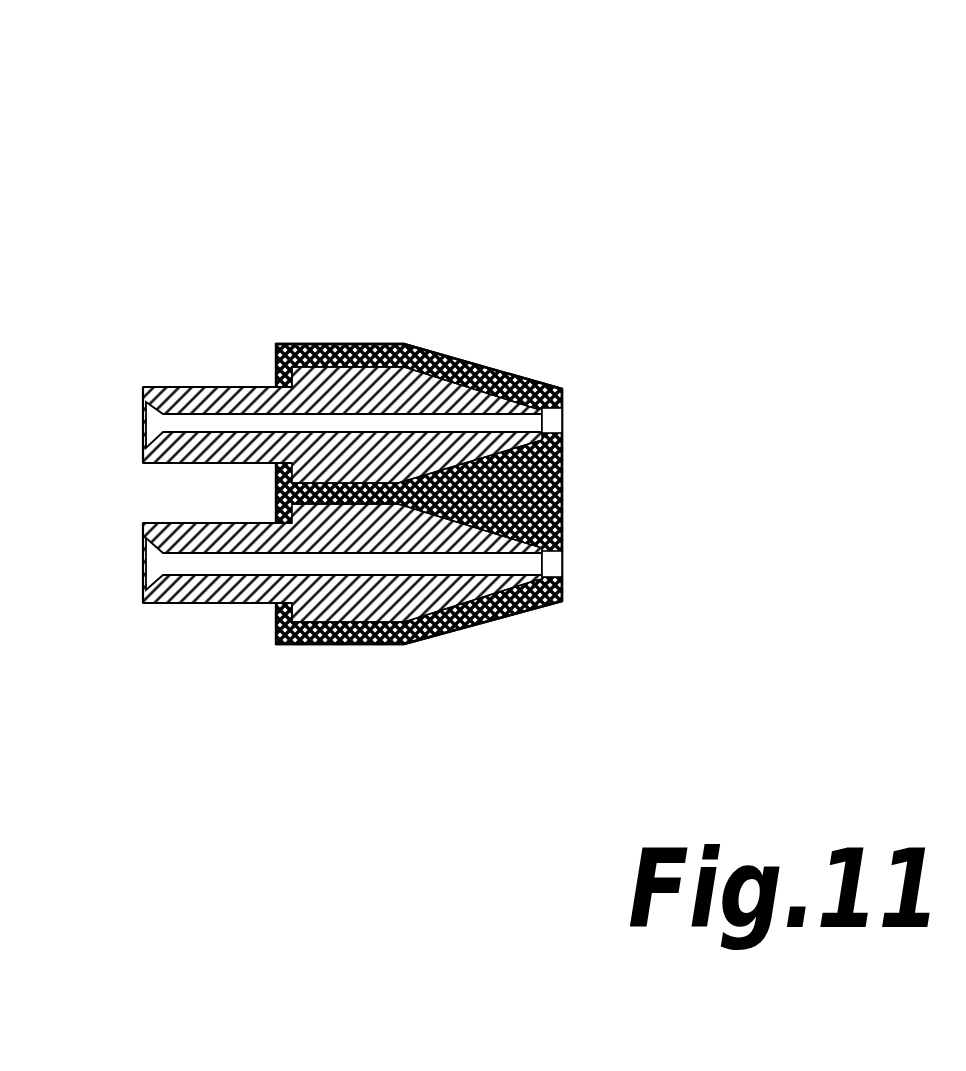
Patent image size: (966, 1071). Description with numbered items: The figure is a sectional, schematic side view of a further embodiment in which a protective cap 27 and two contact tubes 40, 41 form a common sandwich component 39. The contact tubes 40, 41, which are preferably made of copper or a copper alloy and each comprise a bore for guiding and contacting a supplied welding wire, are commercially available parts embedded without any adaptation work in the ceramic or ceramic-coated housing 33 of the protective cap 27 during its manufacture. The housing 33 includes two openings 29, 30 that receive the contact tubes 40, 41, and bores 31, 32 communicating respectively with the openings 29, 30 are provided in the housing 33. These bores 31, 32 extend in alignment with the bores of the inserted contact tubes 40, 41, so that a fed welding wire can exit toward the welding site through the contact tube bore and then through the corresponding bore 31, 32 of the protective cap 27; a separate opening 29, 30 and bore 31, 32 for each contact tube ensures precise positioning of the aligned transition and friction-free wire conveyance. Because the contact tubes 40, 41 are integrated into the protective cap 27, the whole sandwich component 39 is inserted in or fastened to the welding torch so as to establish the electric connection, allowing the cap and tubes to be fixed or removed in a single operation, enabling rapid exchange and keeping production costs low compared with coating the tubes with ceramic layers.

The protective cap 27 is at (632, 317).
The sandwich component 39 is at (452, 297).
The opening 29 is at (318, 345).
The opening 30 is at (303, 647).
The bore 31 is at (552, 420).
The bore 32 is at (552, 565).
The housing 33 is at (562, 497).
The contact tube 40 is at (216, 401).
The contact tube 41 is at (210, 606).